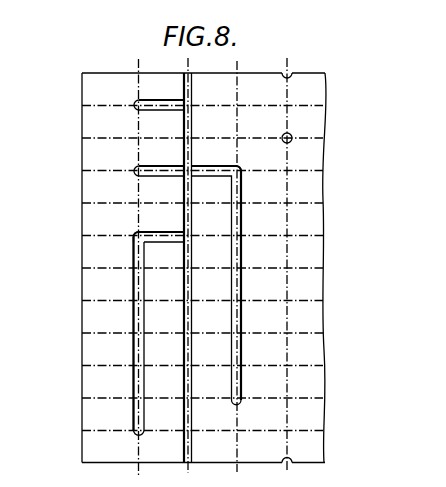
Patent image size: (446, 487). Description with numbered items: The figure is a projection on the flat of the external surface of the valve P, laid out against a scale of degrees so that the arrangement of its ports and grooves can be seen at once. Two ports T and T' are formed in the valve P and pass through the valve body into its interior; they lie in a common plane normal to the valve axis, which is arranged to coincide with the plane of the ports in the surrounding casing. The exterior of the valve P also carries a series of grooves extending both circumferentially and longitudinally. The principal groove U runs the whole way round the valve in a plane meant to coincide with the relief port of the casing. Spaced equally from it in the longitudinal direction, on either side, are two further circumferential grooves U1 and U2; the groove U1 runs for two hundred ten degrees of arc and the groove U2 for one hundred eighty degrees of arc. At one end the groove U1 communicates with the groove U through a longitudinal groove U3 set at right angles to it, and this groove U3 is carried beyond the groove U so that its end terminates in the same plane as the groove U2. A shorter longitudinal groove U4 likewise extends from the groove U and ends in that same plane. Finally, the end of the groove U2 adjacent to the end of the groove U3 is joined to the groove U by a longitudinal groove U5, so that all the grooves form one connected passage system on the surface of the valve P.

The valve P is at (258, 100).
The port T is at (299, 264).
The port T' is at (316, 147).
The principal groove U is at (192, 91).
The circumferential groove U1 is at (243, 260).
The circumferential groove U2 is at (132, 353).
The longitudinal groove U3 is at (143, 165).
The longitudinal groove U4 is at (160, 103).
The longitudinal groove U5 is at (157, 237).